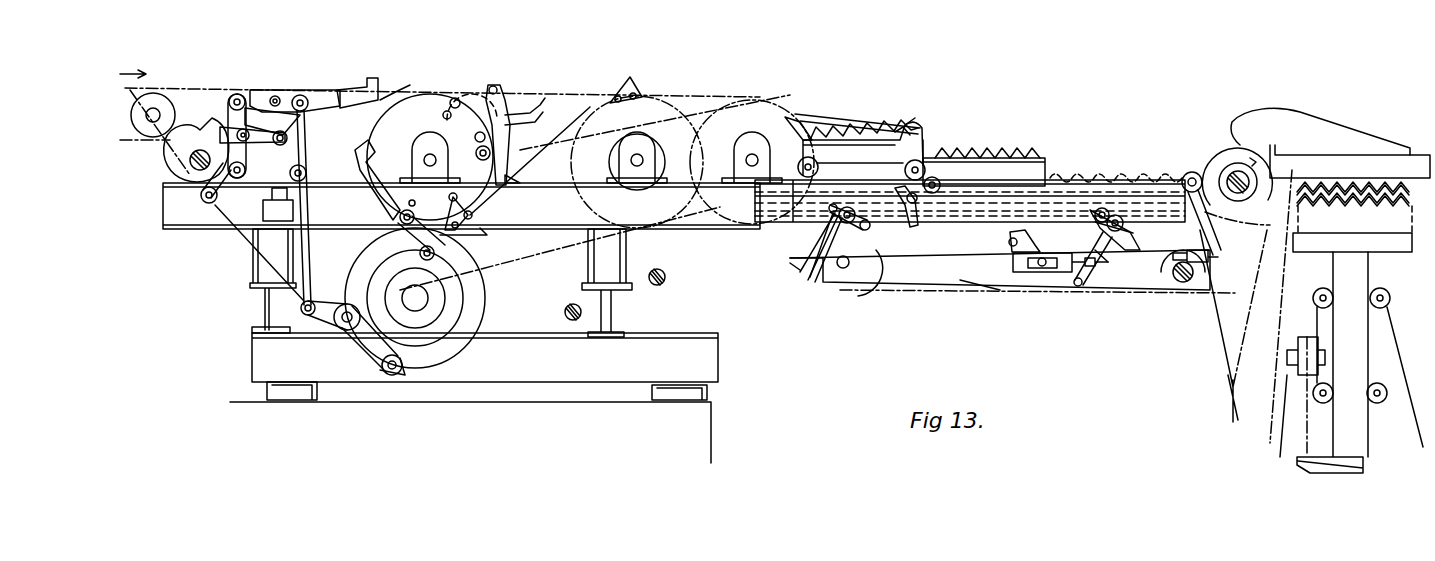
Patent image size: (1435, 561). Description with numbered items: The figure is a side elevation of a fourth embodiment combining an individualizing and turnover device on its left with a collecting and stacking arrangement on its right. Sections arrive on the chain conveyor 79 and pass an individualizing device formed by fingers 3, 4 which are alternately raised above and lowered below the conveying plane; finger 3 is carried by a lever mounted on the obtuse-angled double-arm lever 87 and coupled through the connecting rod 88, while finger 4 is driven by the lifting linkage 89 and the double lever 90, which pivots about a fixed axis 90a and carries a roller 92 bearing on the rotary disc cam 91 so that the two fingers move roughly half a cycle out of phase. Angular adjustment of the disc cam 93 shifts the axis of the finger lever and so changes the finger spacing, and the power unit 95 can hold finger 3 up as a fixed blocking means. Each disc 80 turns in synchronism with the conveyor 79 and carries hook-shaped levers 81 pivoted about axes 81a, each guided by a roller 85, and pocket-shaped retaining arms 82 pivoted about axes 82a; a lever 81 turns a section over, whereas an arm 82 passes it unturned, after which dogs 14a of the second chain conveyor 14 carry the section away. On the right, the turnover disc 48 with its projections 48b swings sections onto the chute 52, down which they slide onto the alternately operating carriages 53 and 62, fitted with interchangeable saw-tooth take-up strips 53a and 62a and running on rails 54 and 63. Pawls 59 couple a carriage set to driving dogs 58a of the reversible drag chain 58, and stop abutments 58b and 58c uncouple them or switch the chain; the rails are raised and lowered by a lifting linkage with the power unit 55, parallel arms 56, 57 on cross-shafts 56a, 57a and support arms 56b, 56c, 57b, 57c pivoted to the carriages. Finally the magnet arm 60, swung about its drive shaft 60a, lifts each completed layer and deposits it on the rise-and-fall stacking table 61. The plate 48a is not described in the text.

The finger 3 is at (323, 88).
The finger 4 is at (367, 83).
The second chain conveyor 14 is at (690, 97).
The dog 14a is at (638, 55).
The turnover disc 48 is at (800, 137).
The rail plate 48a is at (790, 118).
The projection 48b is at (857, 137).
The chute 52 is at (833, 130).
The carriage 53 is at (1005, 175).
The saw-tooth take-up strip 53a is at (1027, 153).
The rail 54 is at (980, 213).
The power unit 55 is at (1027, 263).
The parallel arm 56 is at (1107, 263).
The cross-shaft 56a is at (1110, 233).
The support arm 56b is at (1110, 220).
The support arm 56c is at (1100, 250).
The parallel arm 57 is at (850, 225).
The cross-shaft 57a is at (830, 235).
The support arm 57b is at (803, 240).
The support arm 57c is at (867, 287).
The drag chain 58 is at (1125, 292).
The driving dog 58a is at (1000, 290).
The stop abutment 58b is at (1173, 275).
The stop abutment 58c is at (900, 123).
The pawl 59 is at (920, 230).
The magnet arm 60 is at (1270, 127).
The drive shaft 60a is at (1233, 167).
The rise-and-fall stacking table 61 is at (1380, 208).
The carriage 62 is at (913, 153).
The saw-tooth take-up strip 62a is at (913, 140).
The rail 63 is at (900, 237).
The chain conveyor 79 is at (395, 97).
The disc 80 is at (420, 103).
The lever 81 is at (500, 100).
The pivot axis 81a is at (350, 170).
The retaining arm 82 is at (543, 120).
The pivot axis 82a is at (533, 107).
The roller 85 is at (493, 90).
The double-arm lever 87 is at (230, 117).
The connecting rod 88 is at (275, 100).
The lifting linkage 89 is at (300, 300).
The double lever 90 is at (373, 357).
The fixed axis 90a is at (340, 313).
The rotary disc cam 91 is at (437, 340).
The roller 92 is at (410, 372).
The disc cam 93 is at (177, 157).
The power unit 95 is at (270, 213).